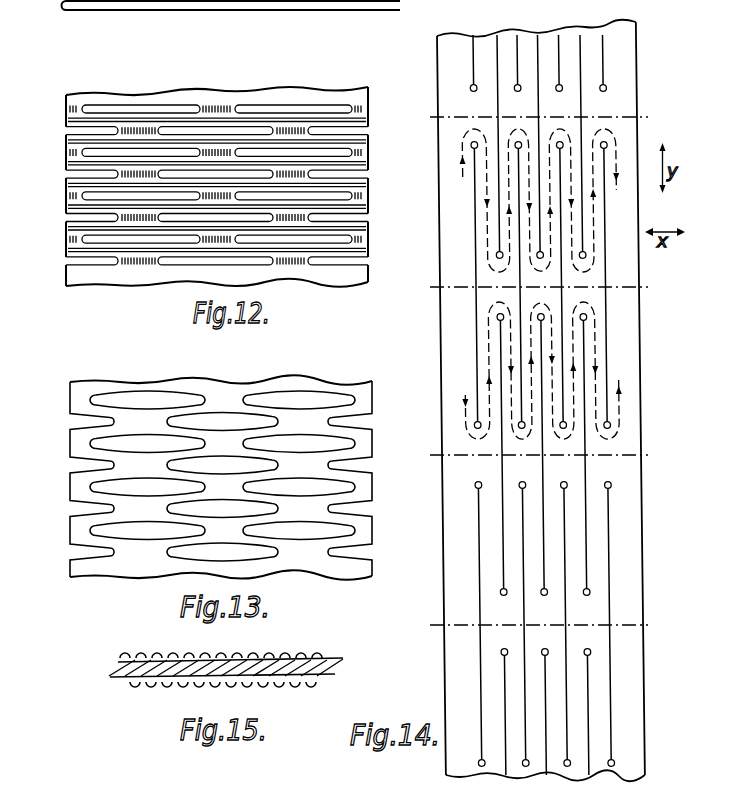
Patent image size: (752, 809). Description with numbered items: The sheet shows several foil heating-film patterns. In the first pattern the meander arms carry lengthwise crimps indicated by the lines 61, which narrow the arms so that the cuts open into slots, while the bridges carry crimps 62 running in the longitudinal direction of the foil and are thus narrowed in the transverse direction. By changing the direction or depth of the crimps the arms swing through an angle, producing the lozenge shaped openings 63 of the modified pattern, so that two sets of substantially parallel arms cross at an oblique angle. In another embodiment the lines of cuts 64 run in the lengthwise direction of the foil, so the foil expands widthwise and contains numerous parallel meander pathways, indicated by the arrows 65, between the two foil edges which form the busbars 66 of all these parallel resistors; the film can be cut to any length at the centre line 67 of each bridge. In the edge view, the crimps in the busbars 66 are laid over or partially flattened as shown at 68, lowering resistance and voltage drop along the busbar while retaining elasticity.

In FIG. 12, the lines 61 is at (90, 171).
In FIG. 12, the crimps 62 is at (217, 147).
In FIG. 13, the lozenge shaped openings 63 is at (270, 400).
In FIG. 14, the lines of cuts 64 is at (520, 360).
In FIG. 14, the arrows 65 is at (459, 161).
In FIG. 14, the busbars 66 is at (450, 264).
In FIG. 14, the x centre line 67 is at (652, 113).
In FIG. 15, the laid over or partially flattened crimps 68 is at (118, 680).